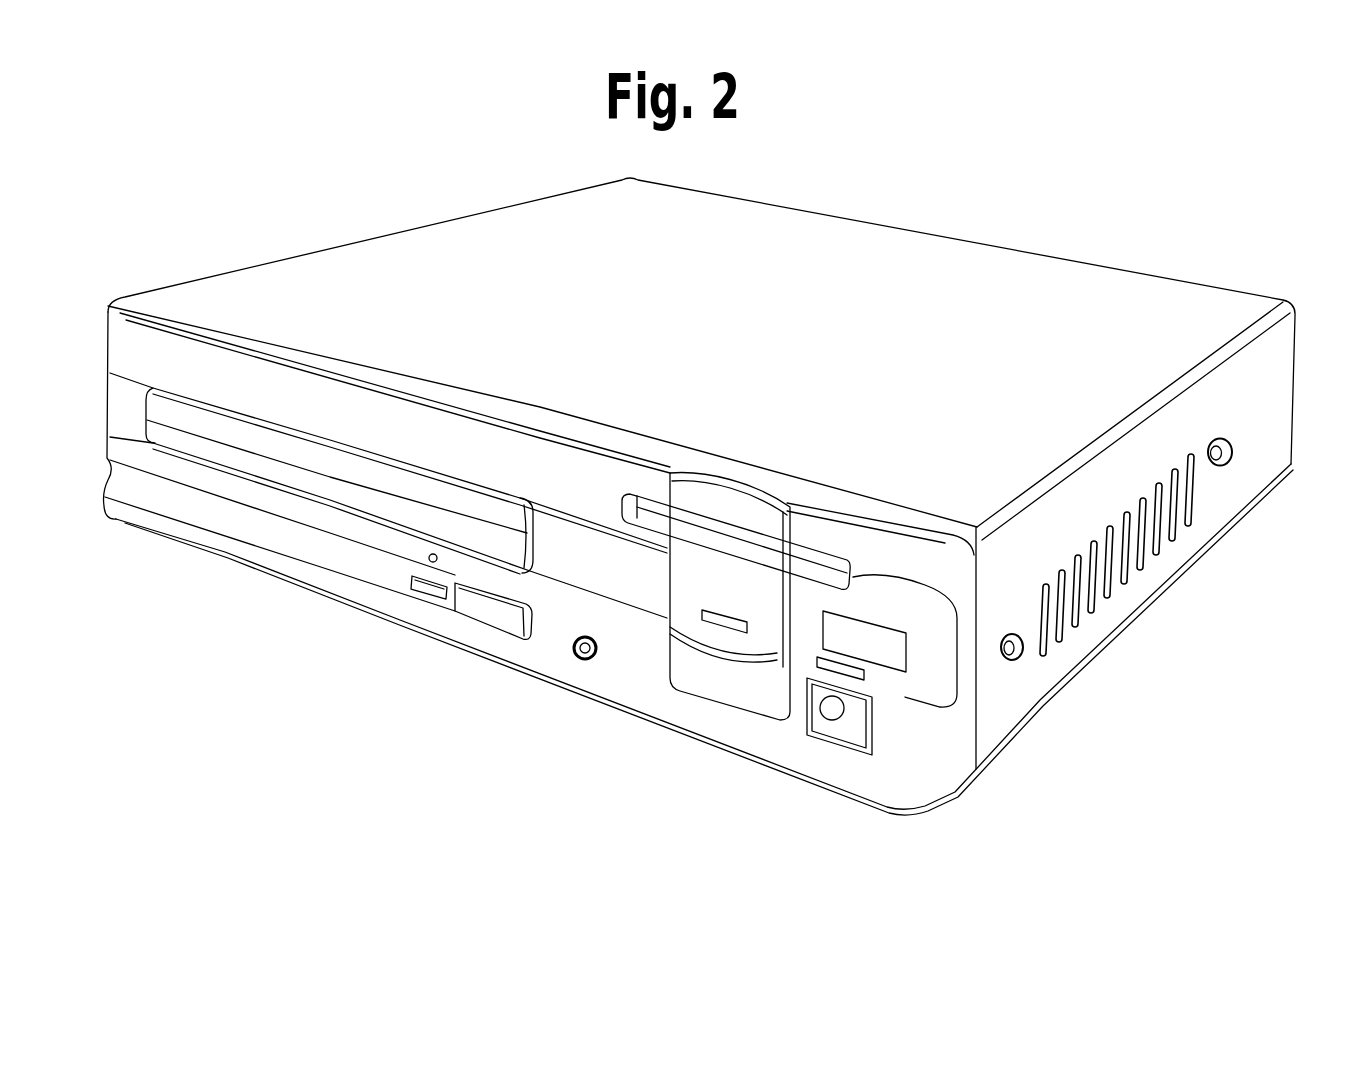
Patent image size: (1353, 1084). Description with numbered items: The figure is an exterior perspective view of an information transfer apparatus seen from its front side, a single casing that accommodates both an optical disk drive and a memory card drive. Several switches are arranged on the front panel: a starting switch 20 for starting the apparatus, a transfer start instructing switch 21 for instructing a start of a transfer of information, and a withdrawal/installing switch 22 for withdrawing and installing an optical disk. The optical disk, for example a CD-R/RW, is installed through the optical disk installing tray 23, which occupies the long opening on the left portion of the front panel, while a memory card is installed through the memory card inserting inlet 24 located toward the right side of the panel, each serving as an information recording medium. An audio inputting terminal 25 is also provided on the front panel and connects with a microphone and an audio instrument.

The starting switch 20 is at (833, 740).
The transfer start instructing switch 21 is at (717, 693).
The withdrawal/installing switch 22 is at (493, 623).
The optical disk installing tray 23 is at (370, 505).
The memory card inserting inlet 24 is at (962, 615).
The audio inputting terminal 25 is at (582, 658).